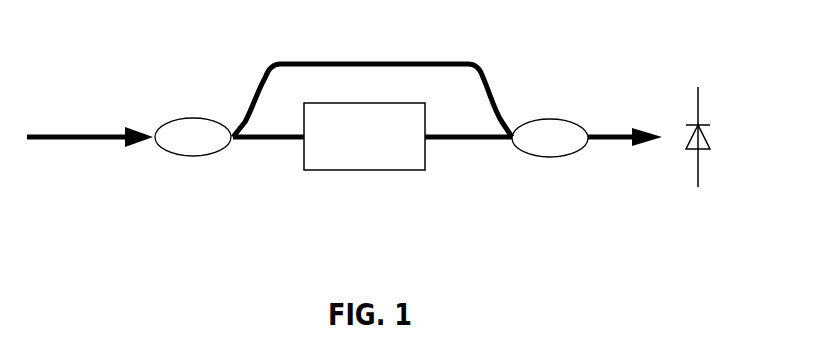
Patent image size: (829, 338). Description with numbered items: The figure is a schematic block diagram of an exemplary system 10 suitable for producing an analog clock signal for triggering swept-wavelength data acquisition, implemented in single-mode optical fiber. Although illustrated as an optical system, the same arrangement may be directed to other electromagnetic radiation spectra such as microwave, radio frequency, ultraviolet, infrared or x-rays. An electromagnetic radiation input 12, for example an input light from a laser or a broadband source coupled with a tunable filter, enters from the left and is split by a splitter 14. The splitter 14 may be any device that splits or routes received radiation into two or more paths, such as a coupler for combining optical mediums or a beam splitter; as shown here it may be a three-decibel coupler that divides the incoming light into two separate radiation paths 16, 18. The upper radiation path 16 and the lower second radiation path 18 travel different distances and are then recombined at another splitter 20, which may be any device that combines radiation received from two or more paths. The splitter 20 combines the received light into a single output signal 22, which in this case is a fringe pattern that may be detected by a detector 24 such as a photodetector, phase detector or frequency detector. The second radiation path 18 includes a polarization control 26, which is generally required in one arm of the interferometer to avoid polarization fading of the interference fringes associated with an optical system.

The system 10 is at (108, 41).
The electromagnetic radiation input 12 is at (62, 133).
The splitter 14 is at (197, 121).
The radiation path 16 is at (360, 63).
The second radiation path 18 is at (256, 141).
The splitter 20 is at (557, 121).
The output signal 22 is at (637, 128).
The detector 24 is at (712, 140).
The polarization control 26 is at (388, 172).